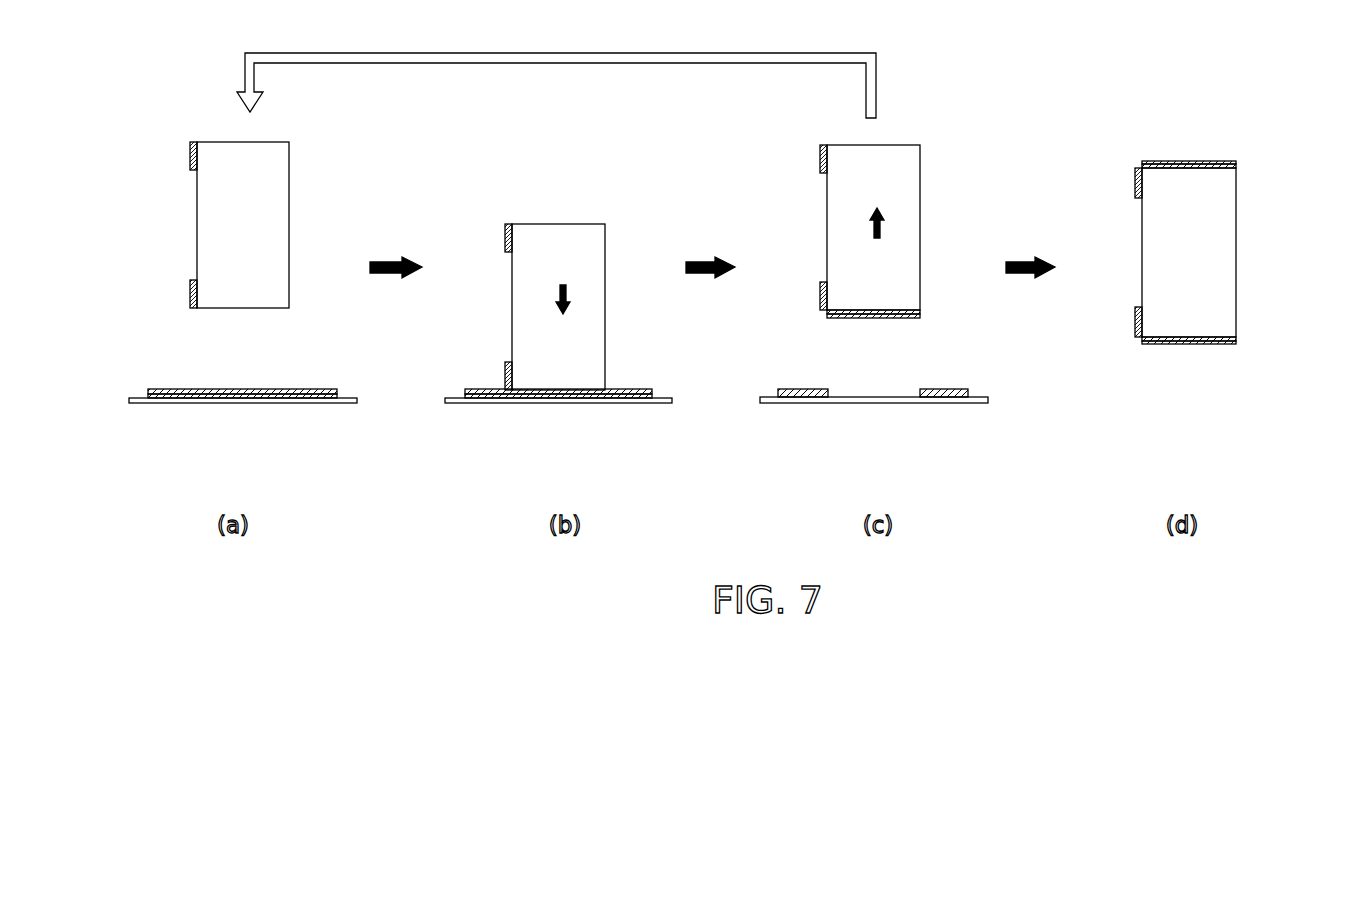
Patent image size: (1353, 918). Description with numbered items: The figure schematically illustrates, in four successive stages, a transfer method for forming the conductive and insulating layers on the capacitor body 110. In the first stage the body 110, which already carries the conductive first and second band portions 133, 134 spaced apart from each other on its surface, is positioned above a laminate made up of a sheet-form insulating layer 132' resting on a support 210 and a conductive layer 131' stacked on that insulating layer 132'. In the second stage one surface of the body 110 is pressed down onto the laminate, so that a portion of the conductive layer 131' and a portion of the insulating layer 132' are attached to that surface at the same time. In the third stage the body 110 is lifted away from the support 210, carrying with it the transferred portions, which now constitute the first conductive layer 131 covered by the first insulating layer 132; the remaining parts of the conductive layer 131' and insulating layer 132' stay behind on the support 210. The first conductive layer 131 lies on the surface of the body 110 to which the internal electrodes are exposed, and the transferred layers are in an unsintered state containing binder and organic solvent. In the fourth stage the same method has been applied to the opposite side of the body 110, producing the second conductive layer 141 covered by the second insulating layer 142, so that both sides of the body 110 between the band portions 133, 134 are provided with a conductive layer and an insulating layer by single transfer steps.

The body 110 is at (204, 222).
The first band portion 133 is at (190, 290).
The second band portion 134 is at (190, 153).
The first conductive layer 131 is at (1076, 327).
The first insulating layer 132 is at (1076, 347).
The conductive layer 131' is at (558, 394).
The insulating layer 132' is at (485, 426).
The second conductive layer 141 is at (1236, 168).
The second insulating layer 142 is at (1222, 162).
The support 210 is at (297, 403).